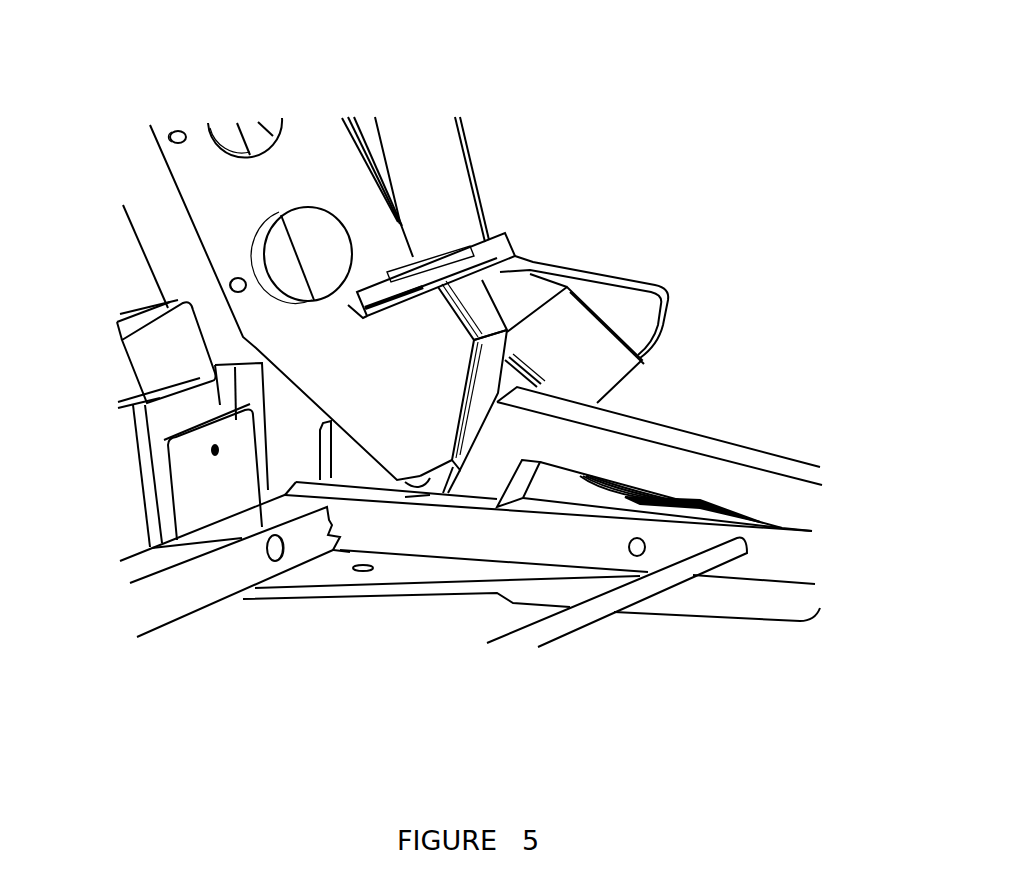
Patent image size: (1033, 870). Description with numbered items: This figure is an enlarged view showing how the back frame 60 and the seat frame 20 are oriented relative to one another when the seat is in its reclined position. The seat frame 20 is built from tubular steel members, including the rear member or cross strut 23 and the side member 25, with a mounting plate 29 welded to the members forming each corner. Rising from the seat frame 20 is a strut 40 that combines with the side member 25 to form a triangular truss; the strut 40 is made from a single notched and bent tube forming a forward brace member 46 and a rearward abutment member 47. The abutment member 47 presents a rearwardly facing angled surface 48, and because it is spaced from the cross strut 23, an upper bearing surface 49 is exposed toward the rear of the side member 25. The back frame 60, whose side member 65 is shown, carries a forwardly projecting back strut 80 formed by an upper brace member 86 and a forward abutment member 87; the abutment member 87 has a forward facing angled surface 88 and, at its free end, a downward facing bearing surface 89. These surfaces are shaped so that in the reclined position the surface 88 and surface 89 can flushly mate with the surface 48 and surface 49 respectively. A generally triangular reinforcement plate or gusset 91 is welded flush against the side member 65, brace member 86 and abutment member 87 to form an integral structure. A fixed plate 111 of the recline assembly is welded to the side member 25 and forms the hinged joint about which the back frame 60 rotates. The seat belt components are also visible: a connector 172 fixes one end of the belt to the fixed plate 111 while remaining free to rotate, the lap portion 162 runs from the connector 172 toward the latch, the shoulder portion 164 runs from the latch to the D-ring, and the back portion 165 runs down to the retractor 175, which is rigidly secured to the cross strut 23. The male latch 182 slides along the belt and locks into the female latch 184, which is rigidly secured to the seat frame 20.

The seat frame portion 20 is at (668, 417).
The rear member or cross strut 23 is at (193, 599).
The side member 25 is at (531, 550).
The mounting plate 29 is at (381, 592).
The strut 40 is at (725, 438).
The forward brace member 46 is at (654, 475).
The rearward abutment member 47 is at (498, 478).
The angled surface 48 is at (452, 482).
The upper bearing surface 49 is at (418, 497).
The back frame 60 is at (312, 125).
The side member 65 is at (248, 152).
The back strut 80 is at (364, 128).
The upper brace member 86 is at (493, 317).
The forward abutment member 87 is at (500, 390).
The forward facing angled surface 88 is at (470, 418).
The downward facing bearing surface 89 is at (425, 475).
The reinforcement plate or gusset 91 is at (335, 366).
The fixed plate 111 is at (333, 442).
The lap portion 162 is at (597, 272).
The shoulder portion 164 is at (452, 172).
The back portion 165 is at (140, 280).
The connector 172 is at (575, 368).
The retractor or receiver 175 is at (143, 498).
The male latch 182 is at (510, 250).
The female latch 184 is at (190, 366).